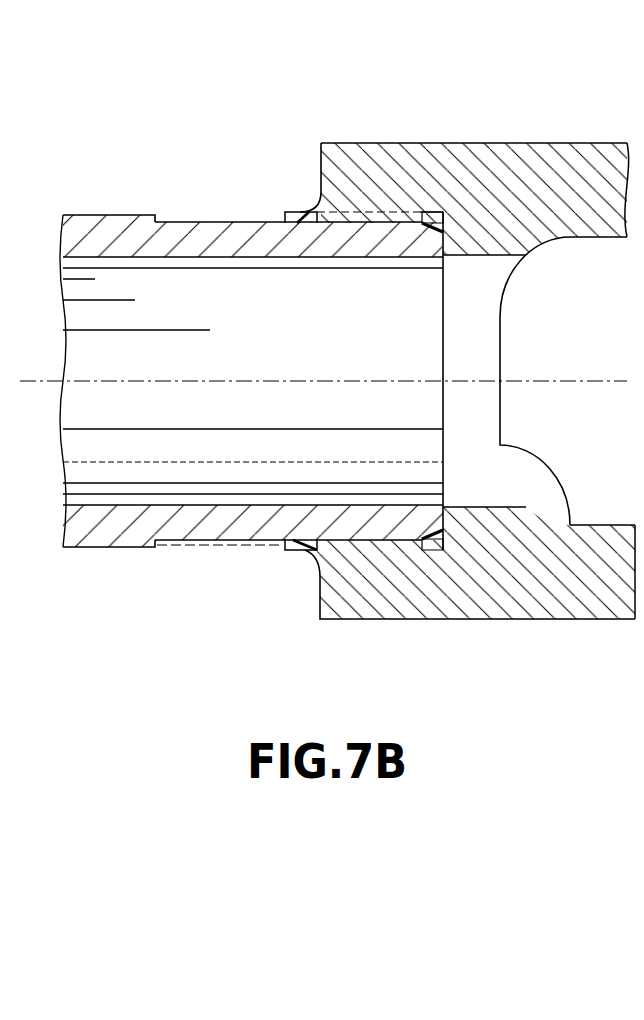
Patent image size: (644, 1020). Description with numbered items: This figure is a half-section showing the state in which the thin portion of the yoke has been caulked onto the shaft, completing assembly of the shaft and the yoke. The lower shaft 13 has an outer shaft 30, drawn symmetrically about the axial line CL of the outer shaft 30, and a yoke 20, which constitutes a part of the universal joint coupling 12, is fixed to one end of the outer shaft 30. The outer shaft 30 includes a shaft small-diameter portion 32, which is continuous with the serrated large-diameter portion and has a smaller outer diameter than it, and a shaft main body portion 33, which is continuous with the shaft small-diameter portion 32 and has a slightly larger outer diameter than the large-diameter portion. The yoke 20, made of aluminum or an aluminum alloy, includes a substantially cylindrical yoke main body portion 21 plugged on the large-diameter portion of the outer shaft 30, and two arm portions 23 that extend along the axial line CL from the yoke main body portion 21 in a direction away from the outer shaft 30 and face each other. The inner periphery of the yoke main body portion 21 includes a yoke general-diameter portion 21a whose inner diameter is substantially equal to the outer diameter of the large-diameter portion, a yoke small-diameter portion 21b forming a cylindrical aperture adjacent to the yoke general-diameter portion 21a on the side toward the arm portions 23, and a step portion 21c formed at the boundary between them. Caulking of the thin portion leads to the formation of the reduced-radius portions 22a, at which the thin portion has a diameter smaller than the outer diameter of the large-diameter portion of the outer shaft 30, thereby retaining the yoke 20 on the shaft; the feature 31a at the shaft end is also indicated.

The yoke 20 is at (467, 369).
The universal joint coupling 12 is at (630, 381).
The yoke main body portion 21 is at (498, 142).
The yoke general-diameter portion 21a is at (375, 232).
The yoke small-diameter portion 21b is at (495, 507).
The step portion 21c is at (435, 255).
The arm portion 23 is at (605, 239).
The reduced-radius portion 22a is at (295, 212).
The outer shaft 30 is at (255, 360).
The lower shaft 13 is at (63, 381).
The flared sealing end of pipe 31a is at (440, 228).
The shaft small-diameter portion 32 is at (198, 541).
The shaft main body portion 33 is at (118, 548).
The axial line CL is at (562, 380).